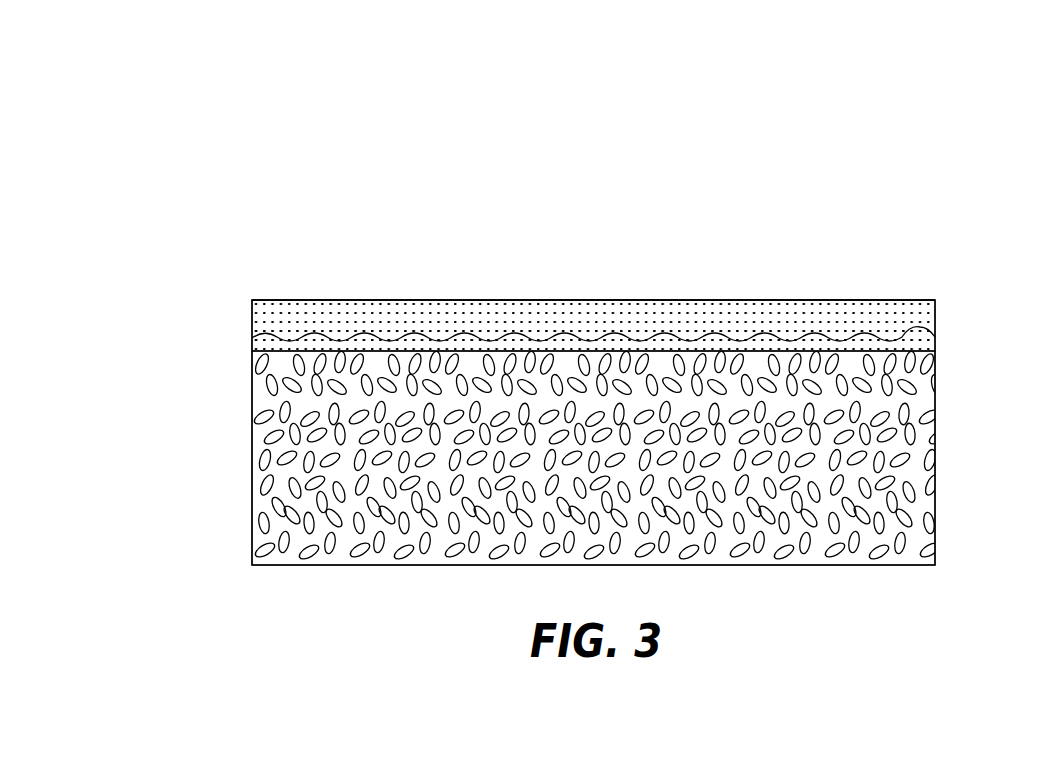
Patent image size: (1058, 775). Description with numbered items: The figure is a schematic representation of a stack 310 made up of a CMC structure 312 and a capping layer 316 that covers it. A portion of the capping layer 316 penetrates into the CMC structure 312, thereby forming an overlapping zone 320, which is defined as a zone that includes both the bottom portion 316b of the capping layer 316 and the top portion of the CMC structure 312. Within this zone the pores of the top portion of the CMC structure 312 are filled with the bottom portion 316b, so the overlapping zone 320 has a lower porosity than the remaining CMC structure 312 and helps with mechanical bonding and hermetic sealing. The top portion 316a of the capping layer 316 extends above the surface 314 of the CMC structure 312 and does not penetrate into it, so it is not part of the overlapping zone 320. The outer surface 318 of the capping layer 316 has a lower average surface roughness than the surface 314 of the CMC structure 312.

The stack 310 is at (893, 215).
The CMC structure 312 is at (258, 485).
The surface of CMC structure 314 is at (480, 333).
The capping layer 316 is at (652, 262).
The top portion of capping layer 316a is at (272, 320).
The bottom portion of capping layer 316b is at (252, 352).
The surface of capping layer 318 is at (353, 298).
The overlapping zone 320 is at (249, 347).